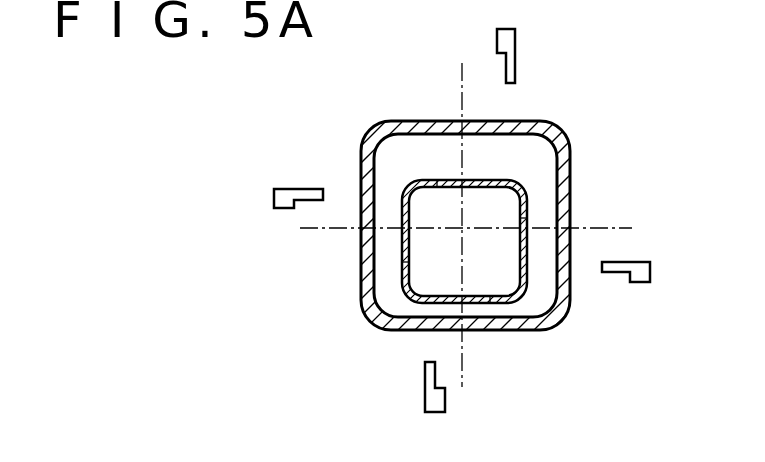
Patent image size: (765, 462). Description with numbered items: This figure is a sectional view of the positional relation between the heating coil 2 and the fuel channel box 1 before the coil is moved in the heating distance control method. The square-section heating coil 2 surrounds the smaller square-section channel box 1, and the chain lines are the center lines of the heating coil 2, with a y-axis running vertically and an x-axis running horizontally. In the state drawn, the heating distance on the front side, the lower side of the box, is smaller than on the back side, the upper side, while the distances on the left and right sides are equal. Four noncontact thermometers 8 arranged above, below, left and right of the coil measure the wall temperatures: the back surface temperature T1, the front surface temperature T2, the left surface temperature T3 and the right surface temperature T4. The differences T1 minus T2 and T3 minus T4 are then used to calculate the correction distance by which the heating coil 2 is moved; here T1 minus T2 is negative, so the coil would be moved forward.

The fuel channel box 1 is at (522, 292).
The heating coil 2 is at (553, 130).
The noncontact thermometer 8 is at (516, 43).
The measured temperature of the back surface T1 is at (437, 181).
The measured temperature of the front surface T2 is at (490, 296).
The measured temperature of the left surface T3 is at (402, 262).
The measured temperature of the right surface T4 is at (528, 218).